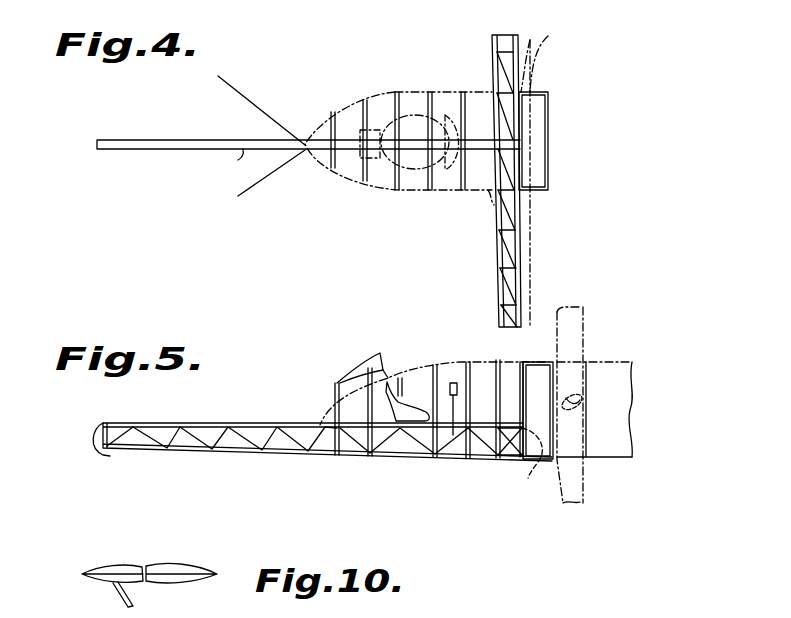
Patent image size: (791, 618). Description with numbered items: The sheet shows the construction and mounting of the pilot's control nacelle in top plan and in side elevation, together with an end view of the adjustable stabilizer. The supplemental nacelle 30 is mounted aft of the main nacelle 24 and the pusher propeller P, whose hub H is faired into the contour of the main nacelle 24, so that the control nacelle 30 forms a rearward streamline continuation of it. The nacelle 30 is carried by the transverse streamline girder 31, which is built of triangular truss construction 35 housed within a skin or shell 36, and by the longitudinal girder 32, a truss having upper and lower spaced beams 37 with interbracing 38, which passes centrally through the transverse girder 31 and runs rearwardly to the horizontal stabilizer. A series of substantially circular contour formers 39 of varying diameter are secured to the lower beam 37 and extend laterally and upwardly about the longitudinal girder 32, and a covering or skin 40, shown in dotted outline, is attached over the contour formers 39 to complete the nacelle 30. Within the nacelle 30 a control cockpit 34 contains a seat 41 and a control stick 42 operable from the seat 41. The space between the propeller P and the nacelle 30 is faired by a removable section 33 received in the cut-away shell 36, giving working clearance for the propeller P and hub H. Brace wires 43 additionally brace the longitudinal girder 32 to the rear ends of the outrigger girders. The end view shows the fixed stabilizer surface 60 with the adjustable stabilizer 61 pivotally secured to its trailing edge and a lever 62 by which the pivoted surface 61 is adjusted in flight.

In FIG. 5, the main nacelle 24 is at (632, 385).
In FIG. 4, the supplemental nacelle 30 is at (421, 87).
In FIG. 5, the supplemental nacelle 30 is at (331, 384).
In FIG. 4, the transverse streamline girder 31 is at (490, 44).
In FIG. 5, the transverse streamline girder 31 is at (523, 464).
In FIG. 4, the longitudinal girder 32 is at (203, 135).
In FIG. 5, the longitudinal girder 32 is at (210, 423).
In FIG. 4, the removable section 33 is at (548, 143).
In FIG. 5, the removable section 33 is at (535, 362).
In FIG. 5, the control cockpit 34 is at (388, 377).
In FIG. 4, the triangular truss construction 35 is at (512, 62).
In FIG. 5, the triangular truss construction 35 is at (513, 445).
In FIG. 4, the skin or shell 36 is at (532, 237).
In FIG. 5, the skin or shell 36 is at (528, 478).
In FIG. 4, the upper and lower spaced beams 37 is at (224, 161).
In FIG. 5, the upper and lower spaced beams 37 is at (115, 447).
In FIG. 5, the interbracing 38 is at (278, 450).
In FIG. 4, the contour formers 39 is at (392, 92).
In FIG. 5, the contour formers 39 is at (497, 362).
In FIG. 4, the covering or skin 40 is at (404, 183).
In FIG. 5, the covering or skin 40 is at (312, 412).
In FIG. 5, the seat 41 is at (404, 408).
In FIG. 5, the control stick 42 is at (458, 388).
In FIG. 4, the brace wires 43 is at (252, 97).
In FIG. 10, the fixed stabilizer surface 60 is at (183, 568).
In FIG. 10, the adjustable stabilizer 61 is at (103, 572).
In FIG. 10, the lever 62 is at (135, 603).
In FIG. 5, the pusher propeller P is at (583, 320).
In FIG. 5, the hub H is at (583, 440).